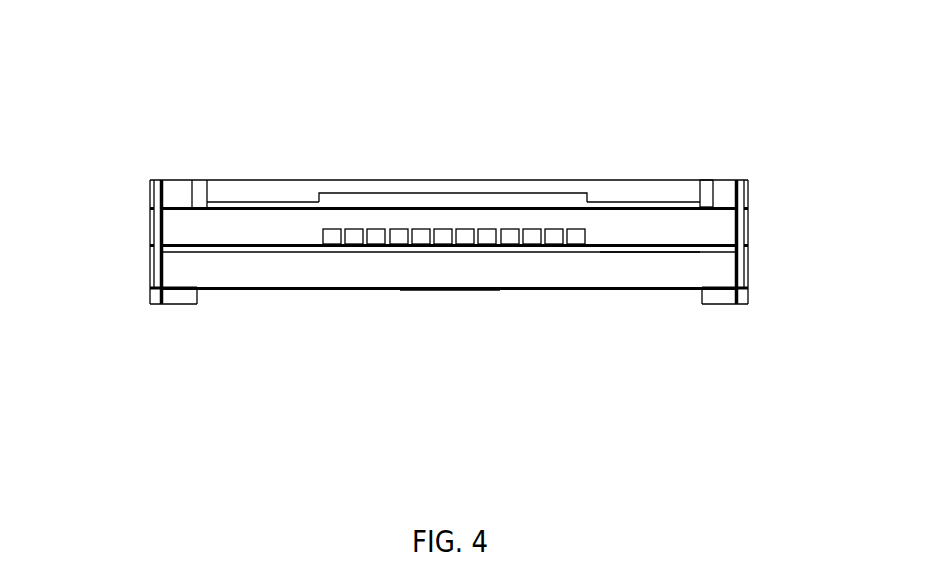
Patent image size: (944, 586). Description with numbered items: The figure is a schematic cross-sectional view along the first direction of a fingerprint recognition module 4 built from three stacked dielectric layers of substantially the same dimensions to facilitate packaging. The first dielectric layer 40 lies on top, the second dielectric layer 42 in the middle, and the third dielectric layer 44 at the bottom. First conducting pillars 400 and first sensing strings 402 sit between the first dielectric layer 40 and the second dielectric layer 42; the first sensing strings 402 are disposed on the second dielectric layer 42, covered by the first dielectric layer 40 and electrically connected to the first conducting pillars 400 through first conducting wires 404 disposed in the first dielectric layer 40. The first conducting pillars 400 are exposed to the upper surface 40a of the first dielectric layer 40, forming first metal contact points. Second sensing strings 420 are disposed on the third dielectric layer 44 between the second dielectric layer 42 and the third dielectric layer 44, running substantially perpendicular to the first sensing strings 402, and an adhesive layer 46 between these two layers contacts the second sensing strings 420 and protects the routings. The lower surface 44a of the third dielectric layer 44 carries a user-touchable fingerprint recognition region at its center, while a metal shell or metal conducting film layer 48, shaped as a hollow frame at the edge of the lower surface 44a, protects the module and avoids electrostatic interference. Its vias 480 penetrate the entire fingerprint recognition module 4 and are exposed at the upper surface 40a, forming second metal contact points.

The fingerprint recognition module 4 is at (829, 67).
The first dielectric layer 40 is at (178, 180).
The first conducting pillars 400 is at (707, 178).
The first sensing strings 402 is at (372, 192).
The first conducting wires 404 is at (263, 193).
The upper surface of the first dielectric layer 40a is at (597, 178).
The second dielectric layer 42 is at (748, 217).
The second sensing strings 420 is at (333, 242).
The third dielectric layer 44 is at (748, 260).
The lower surface of the third dielectric layer 44a is at (450, 290).
The adhesive layer 46 is at (661, 250).
The metal shell or metal conducting film layer 48 is at (748, 293).
The vias 480 is at (162, 230).